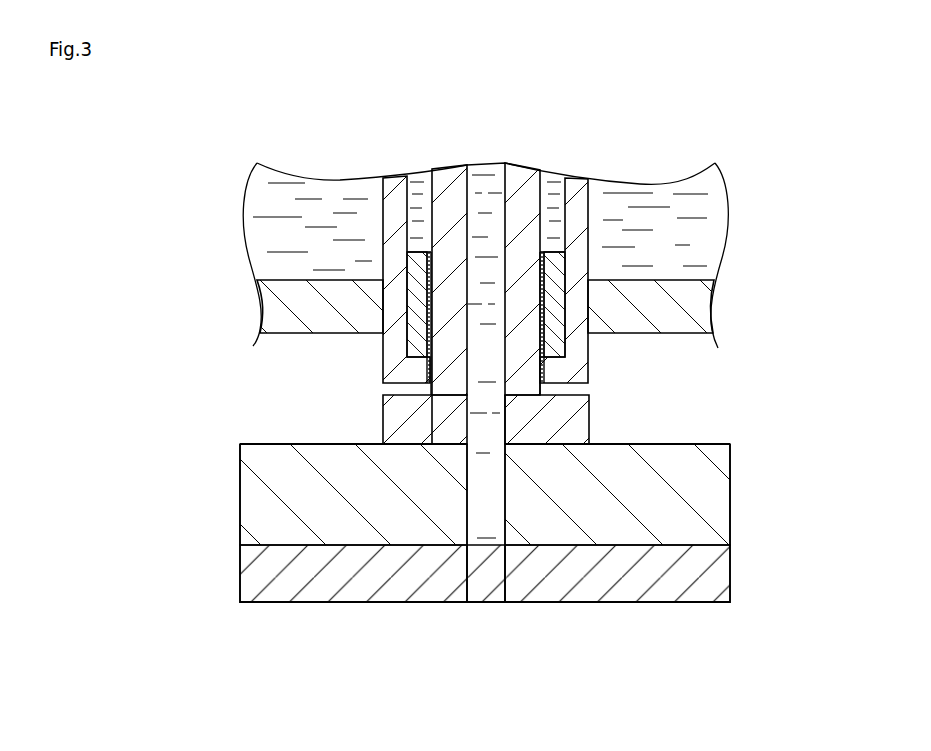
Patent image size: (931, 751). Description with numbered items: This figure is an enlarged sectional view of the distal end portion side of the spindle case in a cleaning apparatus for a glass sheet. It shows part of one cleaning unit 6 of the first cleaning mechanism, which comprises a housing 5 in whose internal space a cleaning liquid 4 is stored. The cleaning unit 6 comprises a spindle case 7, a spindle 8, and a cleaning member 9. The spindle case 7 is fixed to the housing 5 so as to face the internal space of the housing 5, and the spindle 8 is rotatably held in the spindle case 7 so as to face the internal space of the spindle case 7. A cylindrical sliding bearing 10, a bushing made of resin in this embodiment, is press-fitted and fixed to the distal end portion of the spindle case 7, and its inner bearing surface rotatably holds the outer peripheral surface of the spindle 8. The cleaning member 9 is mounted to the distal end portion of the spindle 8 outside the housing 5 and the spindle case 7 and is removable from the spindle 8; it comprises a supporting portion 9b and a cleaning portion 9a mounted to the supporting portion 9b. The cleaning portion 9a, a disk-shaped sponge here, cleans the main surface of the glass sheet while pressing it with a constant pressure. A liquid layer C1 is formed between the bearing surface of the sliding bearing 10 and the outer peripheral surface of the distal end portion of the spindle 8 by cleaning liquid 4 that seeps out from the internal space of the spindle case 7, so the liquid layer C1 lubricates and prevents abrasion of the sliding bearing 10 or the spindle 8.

The cleaning liquid 4 is at (664, 186).
The housing 5 is at (673, 321).
The cleaning unit 6 is at (512, 538).
The spindle case 7 is at (390, 186).
The spindle 8 is at (444, 181).
The cleaning member 9 is at (512, 502).
The cleaning portion 9a is at (713, 576).
The supporting portion 9b is at (713, 504).
The sliding bearing 10 is at (557, 332).
The liquid layer C1 is at (428, 336).